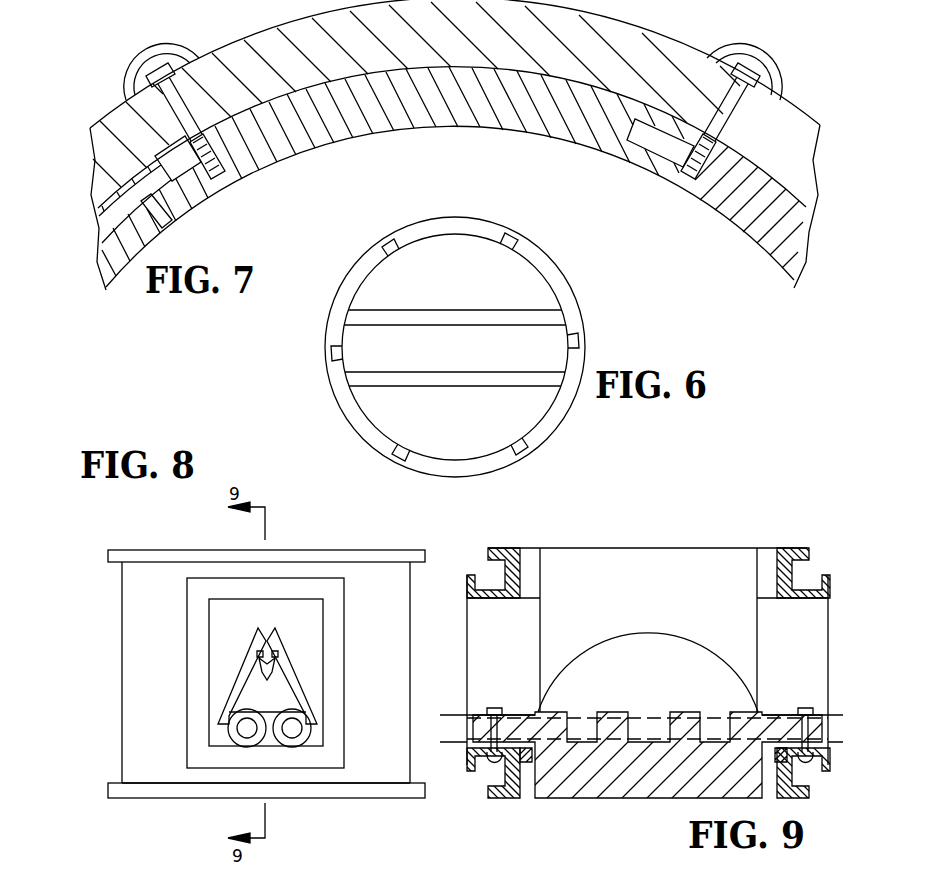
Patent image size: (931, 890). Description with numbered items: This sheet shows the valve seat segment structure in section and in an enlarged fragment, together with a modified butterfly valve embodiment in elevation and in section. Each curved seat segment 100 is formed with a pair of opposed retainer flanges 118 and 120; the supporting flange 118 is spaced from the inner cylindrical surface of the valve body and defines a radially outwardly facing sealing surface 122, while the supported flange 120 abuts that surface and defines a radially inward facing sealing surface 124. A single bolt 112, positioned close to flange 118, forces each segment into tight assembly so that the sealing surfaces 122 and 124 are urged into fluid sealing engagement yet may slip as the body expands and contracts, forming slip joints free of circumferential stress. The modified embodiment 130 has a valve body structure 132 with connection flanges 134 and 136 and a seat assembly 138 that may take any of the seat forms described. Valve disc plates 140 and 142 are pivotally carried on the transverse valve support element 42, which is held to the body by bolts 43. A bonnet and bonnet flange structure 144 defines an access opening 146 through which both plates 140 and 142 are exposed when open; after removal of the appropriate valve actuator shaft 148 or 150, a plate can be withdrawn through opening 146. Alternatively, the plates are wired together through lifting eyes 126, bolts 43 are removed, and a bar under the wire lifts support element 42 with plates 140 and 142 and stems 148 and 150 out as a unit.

In FIG. 6, the seat segment 100 is at (568, 283).
In FIG. 7, the bolt 112 is at (772, 58).
In FIG. 7, the retainer flange 118 is at (633, 173).
In FIG. 7, the retainer flange 120 is at (665, 123).
In FIG. 7, the sealing surface 122 is at (668, 140).
In FIG. 7, the sealing surface 124 is at (606, 3).
In FIG. 8, the lifting eye 126 is at (267, 681).
In FIG. 8, the modified embodiment 130 is at (118, 692).
In FIG. 8, the valve body structure 132 is at (122, 713).
In FIG. 8, the connection flange 134 is at (108, 553).
In FIG. 8, the connection flange 136 is at (108, 790).
In FIG. 8, the seat assembly 138 is at (383, 773).
In FIG. 8, the valve disc plate 140 is at (242, 663).
In FIG. 8, the valve disc plate 142 is at (292, 662).
In FIG. 8, the bonnet and bonnet flange structure 144 is at (187, 612).
In FIG. 8, the access opening 146 is at (308, 600).
In FIG. 8, the valve actuator shaft 148 is at (252, 735).
In FIG. 8, the valve actuator shaft 150 is at (297, 735).
In FIG. 9, the valve support element 42 is at (645, 790).
In FIG. 9, the bolt 43 is at (492, 708).